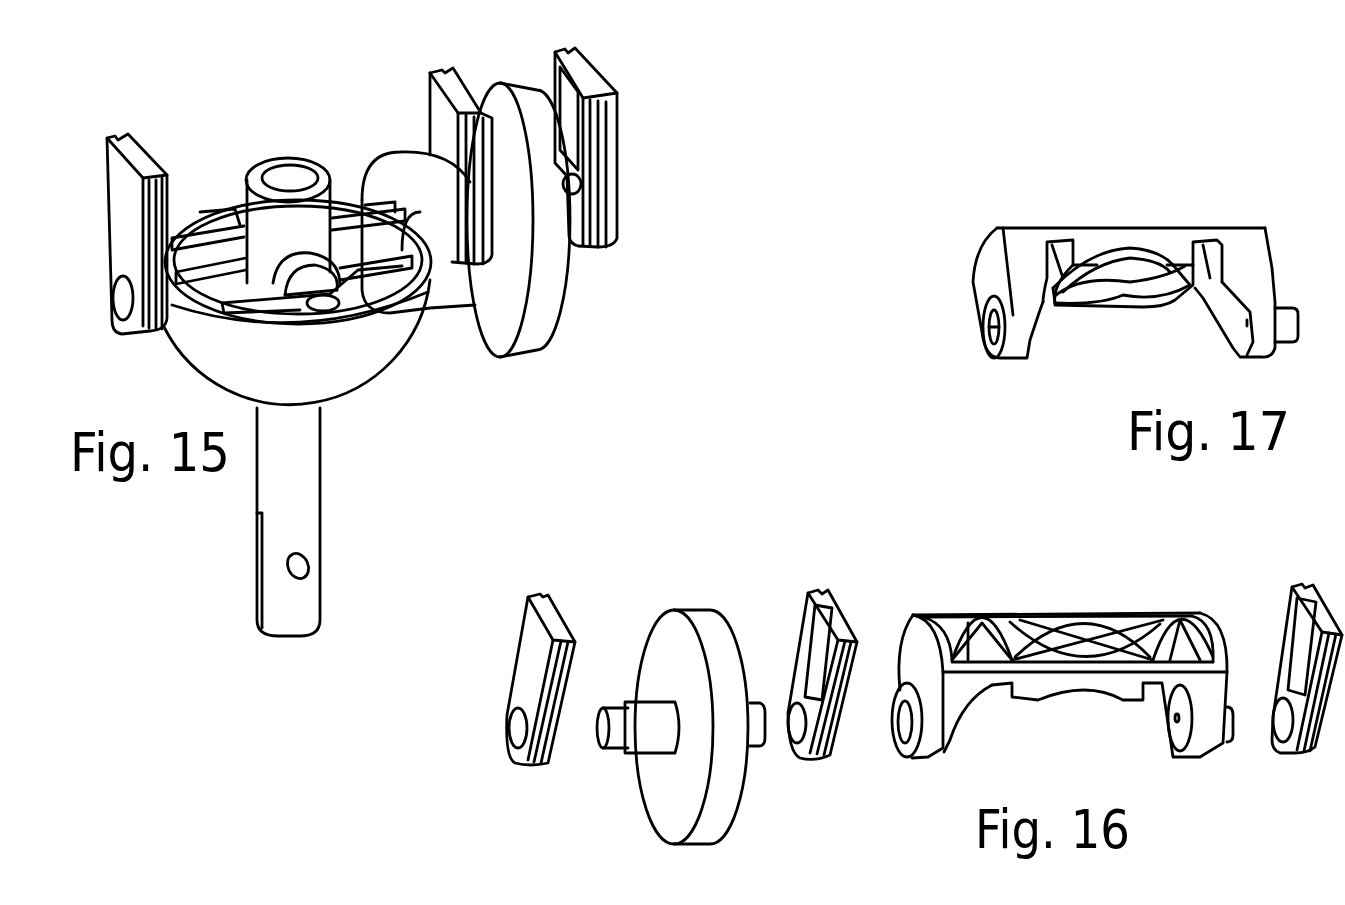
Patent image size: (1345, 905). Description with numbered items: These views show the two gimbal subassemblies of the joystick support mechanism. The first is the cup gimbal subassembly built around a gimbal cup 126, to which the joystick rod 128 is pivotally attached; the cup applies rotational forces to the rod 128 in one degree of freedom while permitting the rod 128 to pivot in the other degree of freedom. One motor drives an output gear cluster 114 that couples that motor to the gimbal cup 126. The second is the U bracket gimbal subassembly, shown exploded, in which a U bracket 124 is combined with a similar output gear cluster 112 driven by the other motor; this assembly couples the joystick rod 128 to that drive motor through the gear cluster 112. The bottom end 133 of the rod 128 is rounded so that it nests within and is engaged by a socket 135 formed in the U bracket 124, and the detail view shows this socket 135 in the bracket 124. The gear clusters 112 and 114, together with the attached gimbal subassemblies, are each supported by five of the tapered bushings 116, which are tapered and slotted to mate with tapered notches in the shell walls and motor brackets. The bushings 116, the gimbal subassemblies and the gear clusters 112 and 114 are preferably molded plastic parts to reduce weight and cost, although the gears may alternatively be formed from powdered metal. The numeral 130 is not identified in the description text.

In FIG. 16, the output gear cluster 112 is at (725, 807).
In FIG. 15, the output gear cluster 114 is at (490, 332).
In FIG. 15, the tapered bushings 116 is at (138, 163).
In FIG. 16, the tapered bushings 116 is at (1310, 587).
In FIG. 17, the U bracket 124 is at (1015, 260).
In FIG. 16, the U bracket 124 is at (918, 653).
In FIG. 15, the gimbal cup 126 is at (403, 337).
In FIG. 15, the joystick rod 128 is at (300, 534).
In FIG. 15, the assembly 130 is at (822, 170).
In FIG. 15, the bottom end of rod 133 is at (320, 168).
In FIG. 17, the socket 135 is at (1127, 268).